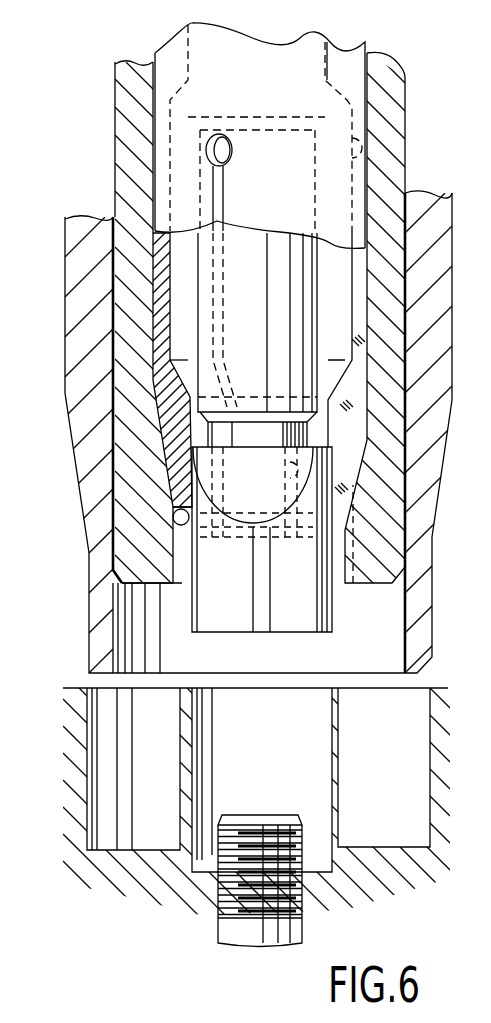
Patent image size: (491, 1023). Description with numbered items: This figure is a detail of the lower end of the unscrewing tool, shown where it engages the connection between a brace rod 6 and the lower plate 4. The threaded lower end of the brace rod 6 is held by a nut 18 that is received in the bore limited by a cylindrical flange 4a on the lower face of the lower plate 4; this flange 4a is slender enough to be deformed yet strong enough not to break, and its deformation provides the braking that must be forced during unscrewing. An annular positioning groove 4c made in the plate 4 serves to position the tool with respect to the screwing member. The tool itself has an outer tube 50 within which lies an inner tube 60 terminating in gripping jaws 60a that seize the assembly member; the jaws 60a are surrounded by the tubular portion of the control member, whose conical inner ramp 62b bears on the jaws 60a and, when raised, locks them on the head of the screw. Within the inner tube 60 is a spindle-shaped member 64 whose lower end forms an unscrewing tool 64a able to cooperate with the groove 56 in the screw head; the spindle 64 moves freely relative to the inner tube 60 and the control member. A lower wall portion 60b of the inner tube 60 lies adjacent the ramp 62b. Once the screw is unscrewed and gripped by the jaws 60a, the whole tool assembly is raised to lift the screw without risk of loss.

The lower plate 4 is at (101, 909).
The cylindrical flange 4a is at (338, 744).
The annular positioning groove 4c is at (96, 699).
The brace rod 6 is at (271, 805).
The nut 18 is at (195, 601).
The outer tube 50 is at (87, 232).
The groove 56 is at (353, 583).
The inner tube 60 is at (162, 122).
The gripping jaws 60a is at (188, 388).
The sleeve end portion 60b is at (165, 472).
The conical inner ramp 62b is at (176, 512).
The spindle-shaped member 64 is at (281, 258).
The unscrewing tool 64a is at (263, 433).